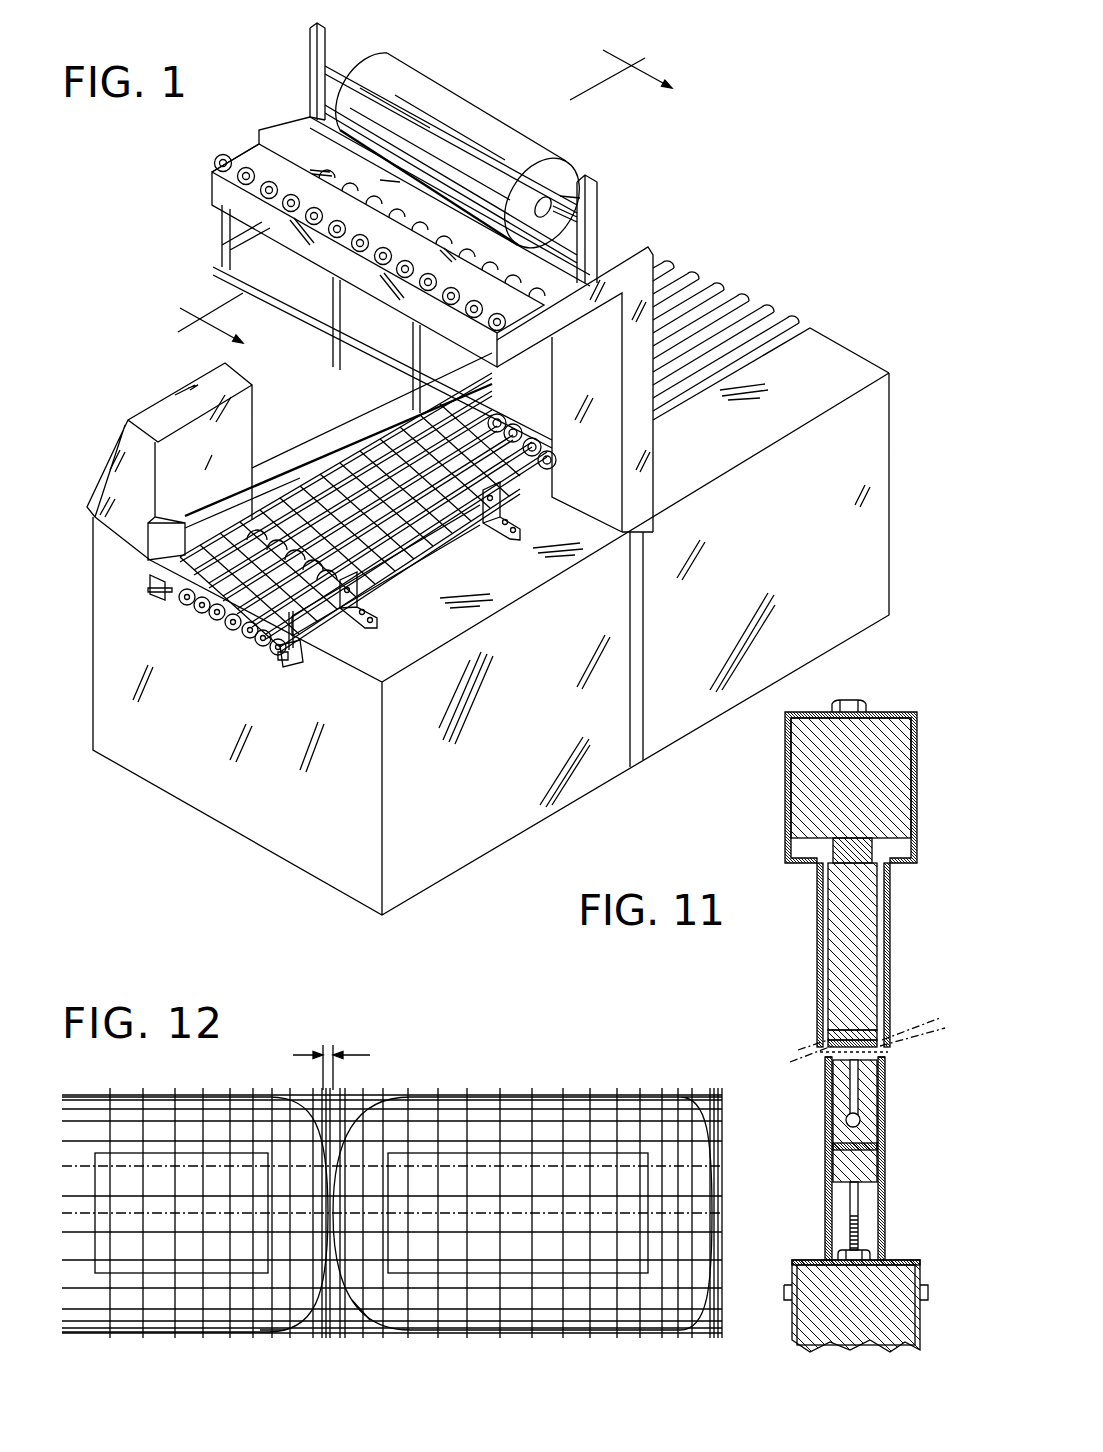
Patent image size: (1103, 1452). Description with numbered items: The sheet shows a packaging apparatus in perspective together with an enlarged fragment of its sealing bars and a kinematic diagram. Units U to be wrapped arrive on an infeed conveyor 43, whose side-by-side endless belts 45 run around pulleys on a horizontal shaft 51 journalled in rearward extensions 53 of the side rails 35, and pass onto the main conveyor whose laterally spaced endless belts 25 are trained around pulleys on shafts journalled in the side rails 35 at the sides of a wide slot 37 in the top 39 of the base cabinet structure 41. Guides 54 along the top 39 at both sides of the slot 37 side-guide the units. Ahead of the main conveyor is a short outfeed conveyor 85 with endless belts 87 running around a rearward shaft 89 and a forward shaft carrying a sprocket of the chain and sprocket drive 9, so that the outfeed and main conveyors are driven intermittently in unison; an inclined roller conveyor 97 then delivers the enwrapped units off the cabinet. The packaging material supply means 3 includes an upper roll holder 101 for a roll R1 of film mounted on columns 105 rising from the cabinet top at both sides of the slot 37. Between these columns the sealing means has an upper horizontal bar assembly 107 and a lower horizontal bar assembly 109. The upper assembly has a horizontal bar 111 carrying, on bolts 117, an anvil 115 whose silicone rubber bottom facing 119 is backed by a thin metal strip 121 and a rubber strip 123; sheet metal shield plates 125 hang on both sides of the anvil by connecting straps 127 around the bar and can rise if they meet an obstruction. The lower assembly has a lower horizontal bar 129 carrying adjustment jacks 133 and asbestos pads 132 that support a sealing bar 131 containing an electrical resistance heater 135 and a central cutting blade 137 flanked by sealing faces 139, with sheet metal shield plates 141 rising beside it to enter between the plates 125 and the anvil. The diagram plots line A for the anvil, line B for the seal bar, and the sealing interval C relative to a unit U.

In FIG. 1, the packaging material supply means 3 is at (192, 177).
In FIG. 1, the chain and sprocket drive 9 is at (418, 187).
In FIG. 1, the roll of packaging material R1 is at (465, 100).
In FIG. 1, the upper roll holder 101 is at (212, 195).
In FIG. 1, the columns 105 is at (333, 347).
In FIG. 1, the inclined roller conveyor 97 is at (742, 298).
In FIG. 1, the top 39 is at (842, 355).
In FIG. 1, the base cabinet structure 41 is at (216, 822).
In FIG. 1, the slot 37 is at (342, 476).
In FIG. 1, the infeed conveyor 43 is at (220, 628).
In FIG. 1, the endless belts 45 is at (198, 612).
In FIG. 1, the guides 54 is at (255, 468).
In FIG. 1, the endless belts 25 is at (290, 482).
In FIG. 1, the outfeed conveyor 85 is at (548, 411).
In FIG. 1, the endless belts 87 is at (533, 434).
In FIG. 1, the rearward shaft 89 is at (518, 512).
In FIG. 1, the side rails 35 is at (297, 648).
In FIG. 1, the rearward extensions 53 is at (150, 590).
In FIG. 1, the horizontal shaft 51 is at (165, 602).
In FIG. 11, the upper horizontal bar assembly 107 is at (795, 925).
In FIG. 11, the lower horizontal bar assembly 109 is at (805, 1147).
In FIG. 11, the horizontal bar 111 is at (818, 762).
In FIG. 11, the anvil 115 is at (850, 958).
In FIG. 11, the bolts 117 is at (855, 704).
In FIG. 11, the silicone rubber bottom facing 119 is at (818, 1040).
In FIG. 11, the thin metal strip 121 is at (888, 1050).
In FIG. 11, the rubber strip 123 is at (884, 1036).
In FIG. 11, the sheet metal shield plates 125 is at (889, 988).
In FIG. 11, the connecting straps 127 is at (916, 798).
In FIG. 11, the lower horizontal bar 129 is at (845, 1325).
In FIG. 11, the sealing bar 131 is at (845, 1102).
In FIG. 11, the asbestos pads 132 is at (880, 1146).
In FIG. 11, the adjustment jacks 133 is at (850, 1212).
In FIG. 11, the electrical resistance heater 135 is at (862, 1118).
In FIG. 11, the central cutting blade 137 is at (880, 1092).
In FIG. 11, the sealing faces 139 is at (830, 1062).
In FIG. 11, the sheet metal shield plates 141 is at (826, 1185).
In FIG. 12, the line A is at (282, 1097).
In FIG. 12, the line B is at (295, 1330).
In FIG. 12, the sealing interval C is at (330, 1050).
In FIG. 12, the units U is at (155, 1273).